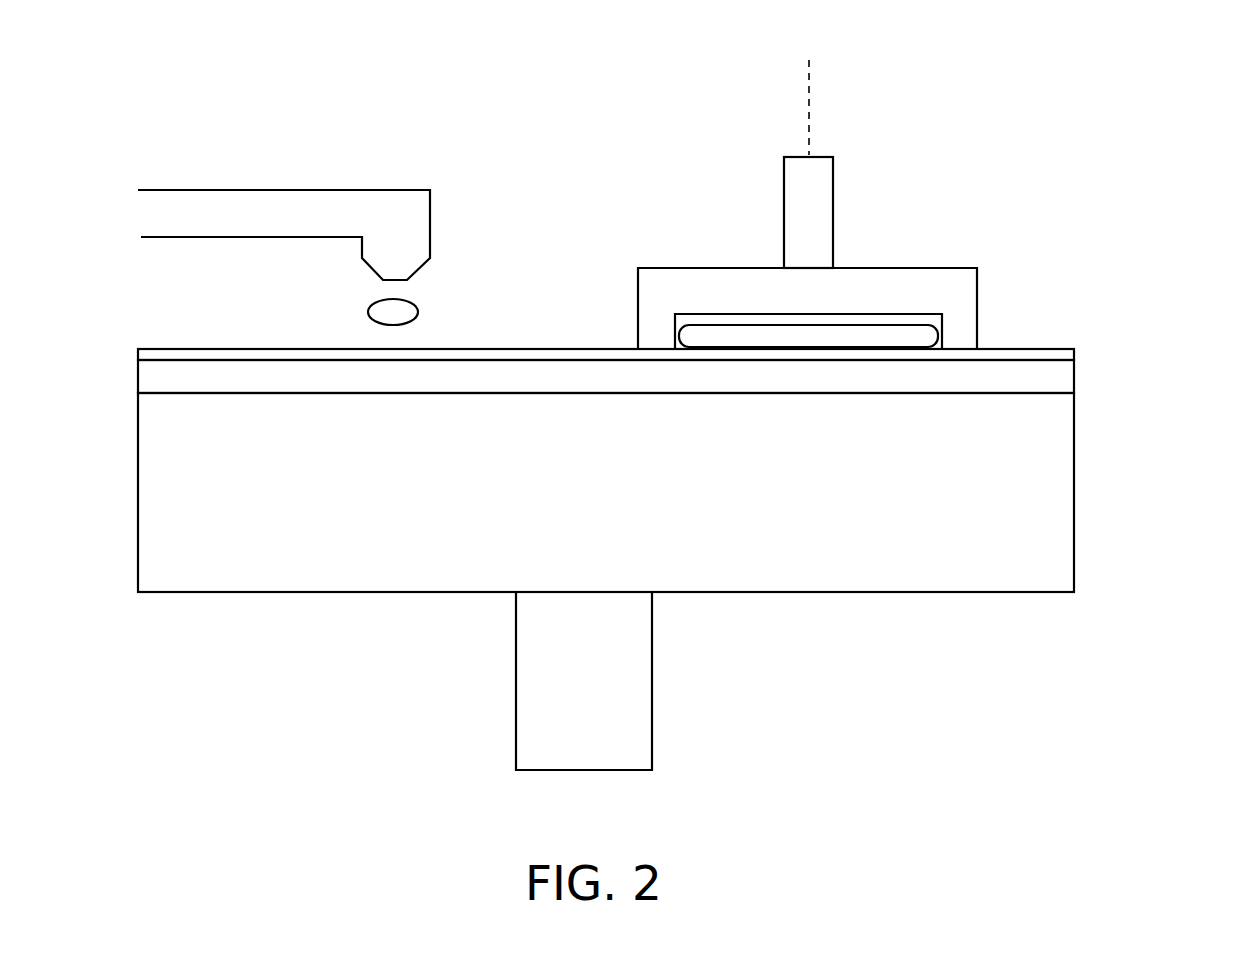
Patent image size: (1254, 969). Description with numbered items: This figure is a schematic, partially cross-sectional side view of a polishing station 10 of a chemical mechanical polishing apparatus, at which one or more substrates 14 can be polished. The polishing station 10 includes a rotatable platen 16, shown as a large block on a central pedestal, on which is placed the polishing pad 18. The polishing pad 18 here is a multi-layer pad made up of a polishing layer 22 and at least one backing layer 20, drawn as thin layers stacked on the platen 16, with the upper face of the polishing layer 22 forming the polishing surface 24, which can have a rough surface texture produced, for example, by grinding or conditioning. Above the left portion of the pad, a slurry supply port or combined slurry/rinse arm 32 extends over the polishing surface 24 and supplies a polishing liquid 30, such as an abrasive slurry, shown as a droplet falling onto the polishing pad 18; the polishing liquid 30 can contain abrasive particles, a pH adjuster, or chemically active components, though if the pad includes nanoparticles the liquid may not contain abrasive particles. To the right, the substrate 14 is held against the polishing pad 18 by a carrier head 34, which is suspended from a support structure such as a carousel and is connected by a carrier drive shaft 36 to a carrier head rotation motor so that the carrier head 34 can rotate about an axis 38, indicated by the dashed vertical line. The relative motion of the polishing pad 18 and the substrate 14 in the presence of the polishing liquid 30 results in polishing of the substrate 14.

The polishing station 10 is at (303, 150).
The substrate 14 is at (870, 325).
The rotatable platen 16 is at (1075, 485).
The polishing pad 18 is at (131, 368).
The backing layer 20 is at (1075, 378).
The polishing layer 22 is at (1075, 355).
The polishing surface 24 is at (492, 348).
The polishing liquid 30 is at (418, 312).
The slurry/rinse arm 32 is at (372, 190).
The carrier head 34 is at (942, 267).
The carrier drive shaft 36 is at (783, 223).
The axis 38 is at (807, 115).